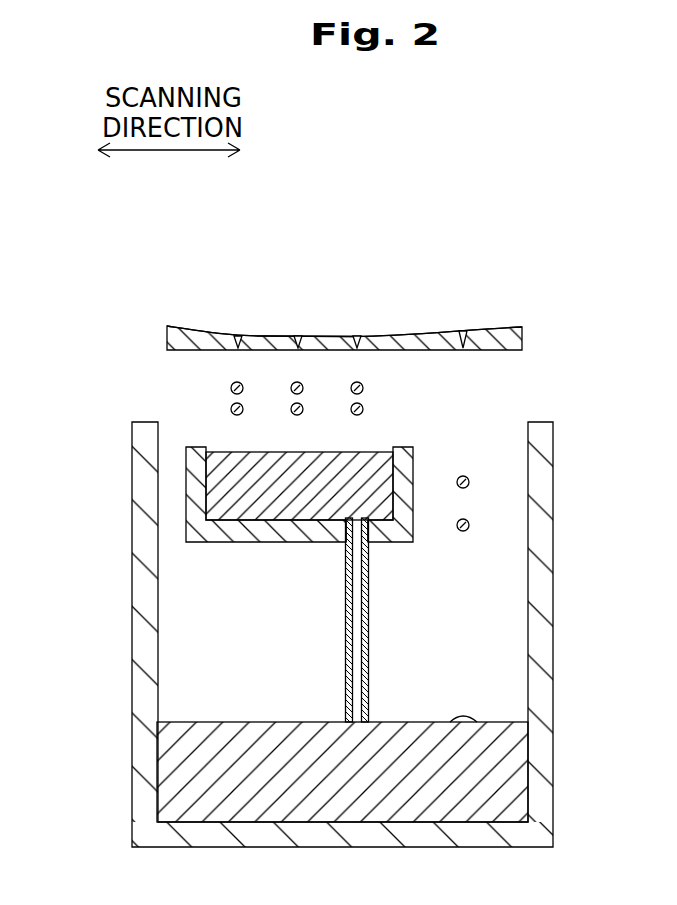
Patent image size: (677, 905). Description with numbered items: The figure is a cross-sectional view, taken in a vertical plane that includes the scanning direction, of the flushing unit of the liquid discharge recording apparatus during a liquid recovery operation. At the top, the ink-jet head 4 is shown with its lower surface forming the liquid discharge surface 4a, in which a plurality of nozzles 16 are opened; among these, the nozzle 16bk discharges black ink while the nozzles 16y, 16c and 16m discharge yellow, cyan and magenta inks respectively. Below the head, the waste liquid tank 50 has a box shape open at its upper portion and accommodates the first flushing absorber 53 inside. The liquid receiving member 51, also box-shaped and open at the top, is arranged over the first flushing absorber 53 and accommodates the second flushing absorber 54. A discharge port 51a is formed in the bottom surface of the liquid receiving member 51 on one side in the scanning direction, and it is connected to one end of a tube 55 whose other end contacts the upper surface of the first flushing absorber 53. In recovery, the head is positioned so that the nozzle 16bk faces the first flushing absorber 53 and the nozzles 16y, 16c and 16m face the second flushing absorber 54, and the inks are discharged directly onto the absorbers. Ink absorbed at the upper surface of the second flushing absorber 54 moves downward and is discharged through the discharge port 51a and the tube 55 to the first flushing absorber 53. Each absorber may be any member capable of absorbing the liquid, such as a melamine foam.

The ink-jet head 4 is at (397, 261).
The liquid discharge surface 4a is at (521, 337).
The nozzles 16 is at (358, 271).
The nozzle for magenta ink 16m is at (238, 337).
The nozzle for cyan ink 16c is at (298, 337).
The nozzle for yellow ink 16y is at (357, 337).
The nozzle for black ink 16bk is at (474, 307).
The waste liquid tank 50 is at (548, 648).
The liquid receiving member 51 is at (225, 584).
The discharge port 51a is at (347, 543).
The first flushing absorber 53 is at (495, 760).
The second flushing absorber 54 is at (248, 505).
The tube 55 is at (350, 672).